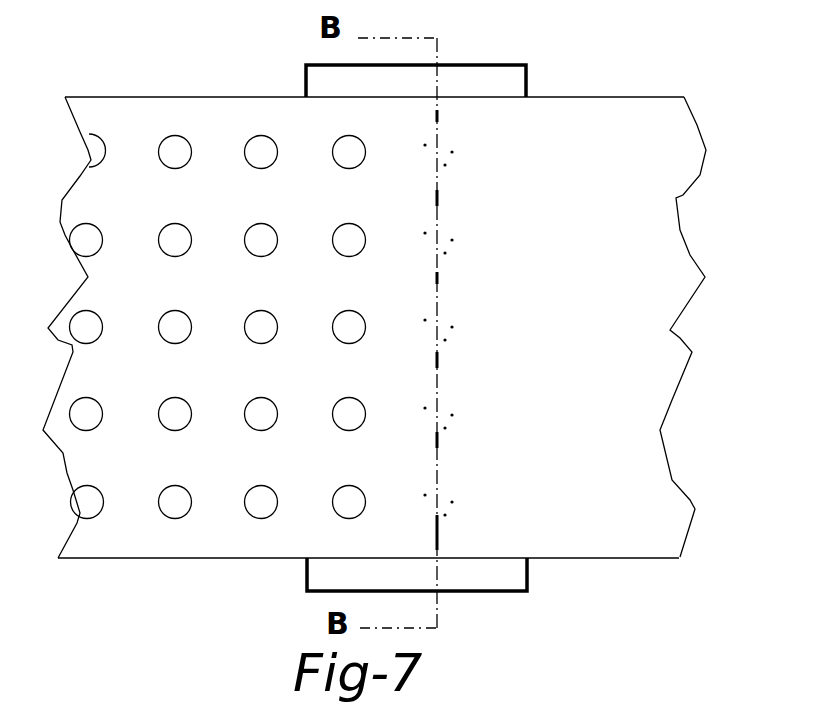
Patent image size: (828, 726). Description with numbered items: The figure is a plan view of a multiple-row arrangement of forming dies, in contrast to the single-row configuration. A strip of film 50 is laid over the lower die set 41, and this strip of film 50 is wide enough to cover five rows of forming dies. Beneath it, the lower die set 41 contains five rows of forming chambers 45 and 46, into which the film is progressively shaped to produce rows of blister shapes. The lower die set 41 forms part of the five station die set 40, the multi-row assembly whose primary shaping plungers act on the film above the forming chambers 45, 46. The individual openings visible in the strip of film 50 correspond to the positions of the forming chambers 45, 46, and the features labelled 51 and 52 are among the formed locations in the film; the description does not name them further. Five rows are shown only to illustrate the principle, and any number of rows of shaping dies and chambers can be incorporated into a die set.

The five station die set 40 is at (546, 575).
The lower die set 41 is at (326, 576).
The forming chambers 45 is at (445, 495).
The forming chambers 46 is at (363, 490).
The strip of film 50 is at (195, 541).
The perforation hole 51 is at (334, 143).
The perforation hole 52 is at (247, 143).